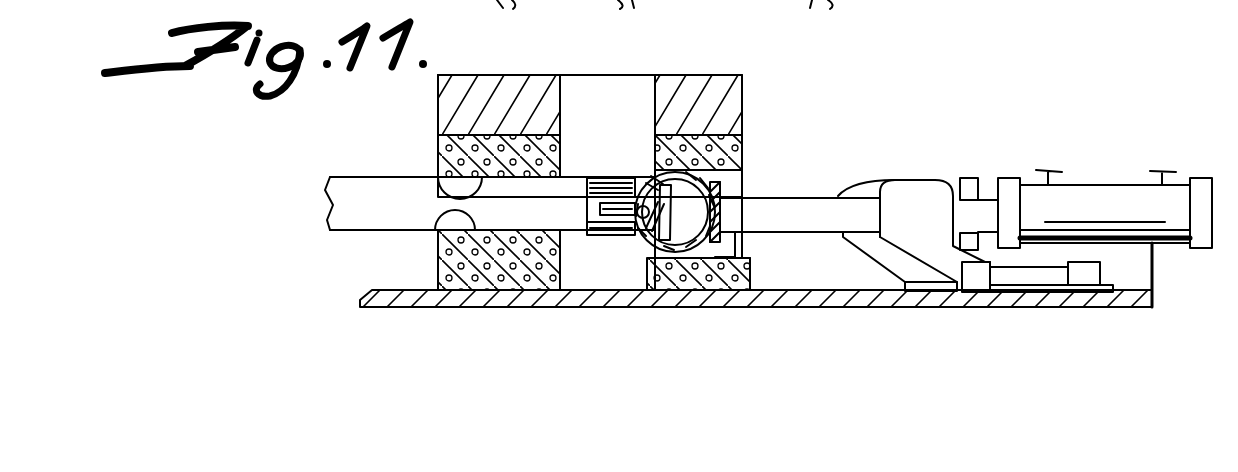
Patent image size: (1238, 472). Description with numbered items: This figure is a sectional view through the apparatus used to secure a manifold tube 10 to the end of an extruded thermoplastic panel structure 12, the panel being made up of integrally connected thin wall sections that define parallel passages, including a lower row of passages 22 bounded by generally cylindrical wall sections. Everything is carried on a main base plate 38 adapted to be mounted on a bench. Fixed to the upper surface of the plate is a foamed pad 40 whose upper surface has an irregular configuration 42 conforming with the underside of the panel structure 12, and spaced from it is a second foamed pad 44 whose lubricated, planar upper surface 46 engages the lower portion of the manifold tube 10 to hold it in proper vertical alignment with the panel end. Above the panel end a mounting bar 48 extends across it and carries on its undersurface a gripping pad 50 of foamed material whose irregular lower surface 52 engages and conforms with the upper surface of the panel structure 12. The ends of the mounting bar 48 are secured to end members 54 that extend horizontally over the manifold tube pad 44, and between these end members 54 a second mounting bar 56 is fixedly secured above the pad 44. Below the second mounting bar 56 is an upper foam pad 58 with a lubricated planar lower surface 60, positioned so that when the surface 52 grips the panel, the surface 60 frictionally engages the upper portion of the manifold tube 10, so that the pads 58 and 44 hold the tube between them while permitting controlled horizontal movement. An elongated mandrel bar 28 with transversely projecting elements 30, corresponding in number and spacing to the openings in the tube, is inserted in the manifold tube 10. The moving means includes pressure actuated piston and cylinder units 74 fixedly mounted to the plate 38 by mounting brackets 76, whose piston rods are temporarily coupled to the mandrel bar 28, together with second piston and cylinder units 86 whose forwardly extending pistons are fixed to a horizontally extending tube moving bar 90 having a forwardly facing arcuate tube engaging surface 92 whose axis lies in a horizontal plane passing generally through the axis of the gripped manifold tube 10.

The manifold tube 10 is at (742, 178).
The panel structure 12 is at (374, 168).
The lower row of passages 22 is at (587, 208).
The mandrel bar 28 is at (743, 242).
The projecting elements 30 is at (637, 176).
The main base plate 38 is at (873, 291).
The pad 40 is at (438, 267).
The irregular configuration 42 is at (437, 233).
The second pad 44 is at (648, 272).
The upper surface 46 is at (751, 270).
The mounting bar 48 is at (530, 88).
The gripping pad 50 is at (482, 148).
The irregular lower surface 52 is at (436, 176).
The end members 54 is at (630, 92).
The second mounting bar 56 is at (742, 97).
The upper foam pad 58 is at (742, 140).
The lubricated lower surface 60 is at (744, 149).
The piston and cylinder units 74 is at (988, 185).
The mounting brackets 76 is at (927, 282).
The second piston and cylinder units 86 is at (1102, 195).
The tube moving bar 90 is at (742, 188).
The arcuate tube engaging surface 92 is at (722, 204).